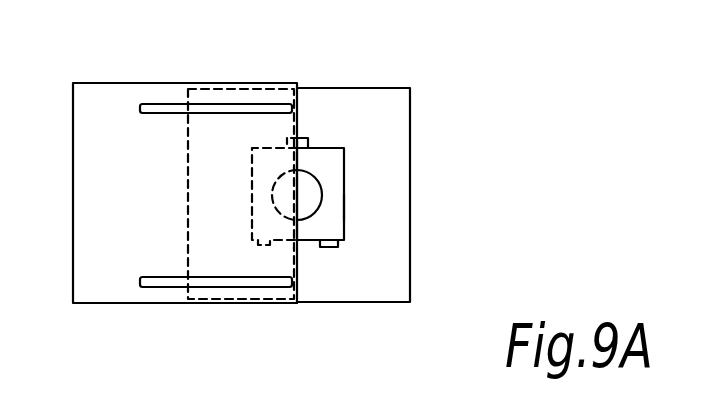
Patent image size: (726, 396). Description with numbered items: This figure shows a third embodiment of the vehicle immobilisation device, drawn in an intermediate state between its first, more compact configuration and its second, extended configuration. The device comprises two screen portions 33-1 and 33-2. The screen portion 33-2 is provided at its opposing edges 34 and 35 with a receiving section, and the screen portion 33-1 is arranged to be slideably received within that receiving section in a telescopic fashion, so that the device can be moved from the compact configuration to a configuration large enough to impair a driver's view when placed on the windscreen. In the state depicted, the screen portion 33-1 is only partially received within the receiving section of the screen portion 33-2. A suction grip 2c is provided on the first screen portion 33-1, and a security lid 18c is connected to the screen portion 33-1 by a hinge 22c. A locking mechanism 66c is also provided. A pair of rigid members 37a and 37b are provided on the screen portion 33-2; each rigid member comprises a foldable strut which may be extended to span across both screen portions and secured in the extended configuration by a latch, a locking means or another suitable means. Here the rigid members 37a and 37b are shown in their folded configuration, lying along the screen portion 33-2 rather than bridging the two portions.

The suction grip 2c is at (320, 186).
The security lid 18c is at (344, 207).
The hinge 22c is at (328, 247).
The first screen portion 33-1 is at (375, 282).
The second screen portion 33-2 is at (92, 300).
The edge 34 is at (265, 305).
The edge 35 is at (278, 83).
The rigid member 37a is at (165, 105).
The rigid member 37b is at (207, 278).
The locking mechanism 66c is at (308, 138).